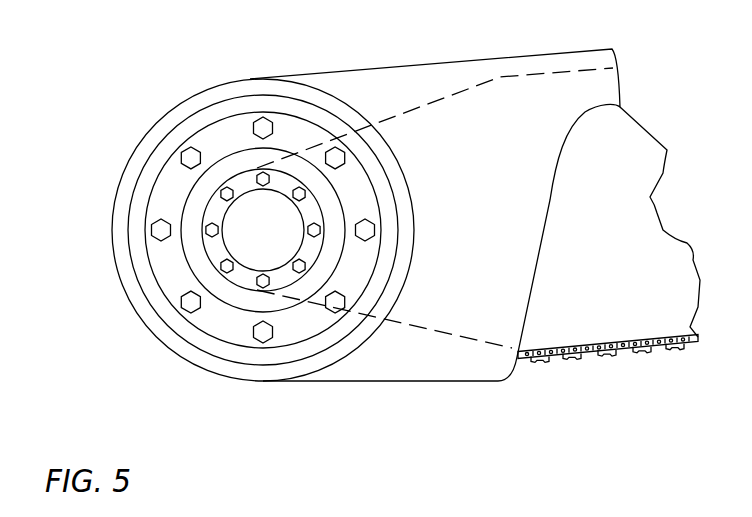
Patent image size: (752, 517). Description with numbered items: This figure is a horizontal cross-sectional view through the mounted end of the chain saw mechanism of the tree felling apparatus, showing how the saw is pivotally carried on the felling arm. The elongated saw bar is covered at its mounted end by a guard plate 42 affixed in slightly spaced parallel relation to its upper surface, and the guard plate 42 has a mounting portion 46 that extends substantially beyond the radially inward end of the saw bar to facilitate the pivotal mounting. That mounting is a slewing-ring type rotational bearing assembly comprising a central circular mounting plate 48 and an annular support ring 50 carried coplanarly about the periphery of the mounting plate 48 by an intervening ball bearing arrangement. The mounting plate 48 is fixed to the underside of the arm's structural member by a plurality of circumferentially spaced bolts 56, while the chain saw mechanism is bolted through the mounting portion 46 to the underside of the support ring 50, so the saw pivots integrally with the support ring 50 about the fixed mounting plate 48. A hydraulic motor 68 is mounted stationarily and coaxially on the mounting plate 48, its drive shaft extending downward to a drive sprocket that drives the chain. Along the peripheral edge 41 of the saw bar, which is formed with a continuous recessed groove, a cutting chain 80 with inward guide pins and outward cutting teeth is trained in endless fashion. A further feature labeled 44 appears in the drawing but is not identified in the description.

The peripheral edge 41 is at (597, 350).
The guard plate 42 is at (532, 50).
The direction of chain travel 44 is at (567, 378).
The mounting portion 46 is at (444, 157).
The mounting plate 48 is at (236, 330).
The support ring 50 is at (192, 333).
The bolts 56 is at (265, 340).
The hydraulic motor 68 is at (240, 240).
The cutting chain 80 is at (645, 357).